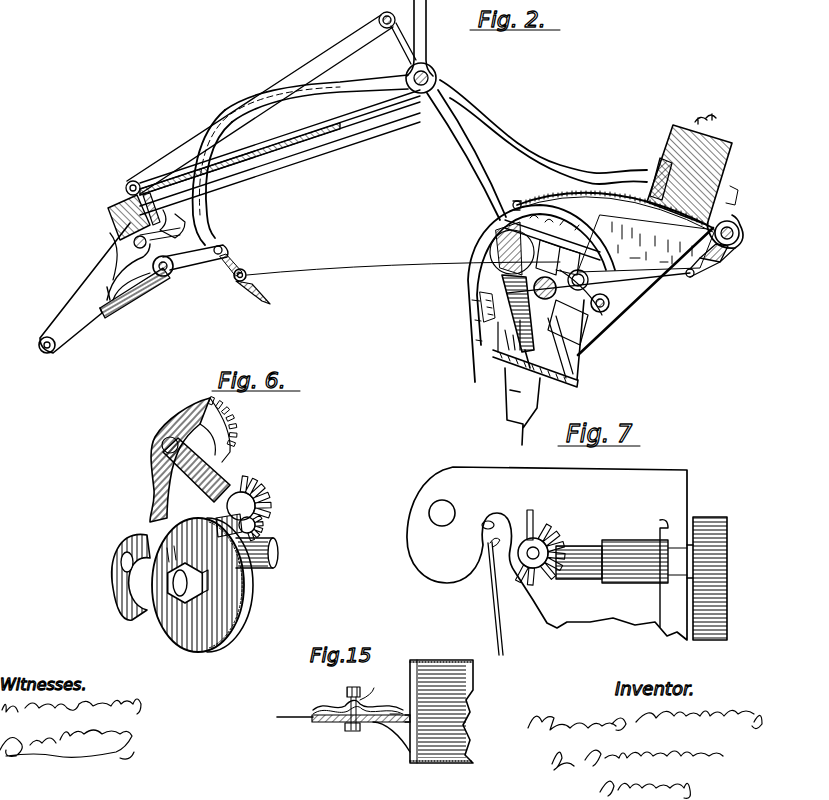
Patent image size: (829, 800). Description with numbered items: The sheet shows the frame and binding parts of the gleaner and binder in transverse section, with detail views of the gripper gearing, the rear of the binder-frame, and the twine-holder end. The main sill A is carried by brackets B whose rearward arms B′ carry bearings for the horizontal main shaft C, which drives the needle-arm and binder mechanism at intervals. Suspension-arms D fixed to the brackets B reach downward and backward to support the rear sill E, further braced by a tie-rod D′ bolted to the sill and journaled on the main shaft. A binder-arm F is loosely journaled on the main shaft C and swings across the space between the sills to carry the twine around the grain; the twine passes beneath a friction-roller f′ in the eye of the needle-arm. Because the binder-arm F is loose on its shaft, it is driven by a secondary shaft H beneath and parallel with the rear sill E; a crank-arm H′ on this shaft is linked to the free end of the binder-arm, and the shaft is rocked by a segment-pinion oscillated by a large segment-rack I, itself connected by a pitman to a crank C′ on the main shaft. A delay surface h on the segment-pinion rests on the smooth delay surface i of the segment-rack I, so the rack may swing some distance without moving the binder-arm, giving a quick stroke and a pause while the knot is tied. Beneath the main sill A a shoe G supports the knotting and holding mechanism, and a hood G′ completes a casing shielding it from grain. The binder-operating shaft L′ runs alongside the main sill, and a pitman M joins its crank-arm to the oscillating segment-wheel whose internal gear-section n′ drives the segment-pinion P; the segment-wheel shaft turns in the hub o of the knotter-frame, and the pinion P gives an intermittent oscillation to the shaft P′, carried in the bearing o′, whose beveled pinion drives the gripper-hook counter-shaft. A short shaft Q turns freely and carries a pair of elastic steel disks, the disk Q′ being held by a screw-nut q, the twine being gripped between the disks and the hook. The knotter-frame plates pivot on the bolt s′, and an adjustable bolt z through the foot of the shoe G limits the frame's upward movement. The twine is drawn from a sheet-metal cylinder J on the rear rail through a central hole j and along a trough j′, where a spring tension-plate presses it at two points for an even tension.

In FIG. 2, the main sill A is at (689, 169).
In FIG. 2, the brackets B is at (543, 134).
In FIG. 2, the bracket arms B′ is at (467, 155).
In FIG. 2, the main shaft C is at (436, 76).
In FIG. 2, the crank C′ is at (404, 46).
In FIG. 2, the suspension-arms D is at (308, 130).
In FIG. 2, the tie-rod D′ is at (300, 136).
In FIG. 2, the rear sill E is at (121, 189).
In FIG. 2, the binder-arm F is at (316, 98).
In FIG. 2, the friction-roller f′ is at (246, 273).
In FIG. 2, the shoe G is at (646, 243).
In FIG. 2, the hood G′ is at (615, 208).
In FIG. 2, the secondary shaft H is at (106, 288).
In FIG. 2, the crank-arm H′ is at (110, 264).
In FIG. 2, the delay surface h is at (122, 246).
In FIG. 2, the segment-rack I is at (108, 230).
In FIG. 2, the delay surface i is at (105, 275).
In FIG. 2, the binder-operating shaft L′ is at (739, 235).
In FIG. 2, the pitman M is at (610, 291).
In FIG. 2, the internal gear-section n′ is at (556, 232).
In FIG. 2, the hub o is at (502, 362).
In FIG. 7, the bearing o′ is at (488, 548).
In FIG. 6, the segment-pinion P is at (228, 432).
In FIG. 7, the segment-pinion P is at (727, 558).
In FIG. 6, the shaft P′ is at (195, 503).
In FIG. 6, the short shaft Q is at (278, 550).
In FIG. 6, the circular disk Q′ is at (169, 551).
In FIG. 6, the screw-nut q is at (172, 584).
In FIG. 2, the bolt s′ is at (565, 333).
In FIG. 2, the adjustable bolt z is at (518, 376).
In FIG. 15, the sheet-metal cylinder J is at (433, 712).
In FIG. 15, the central hole j is at (411, 718).
In FIG. 15, the trough j′ is at (320, 708).